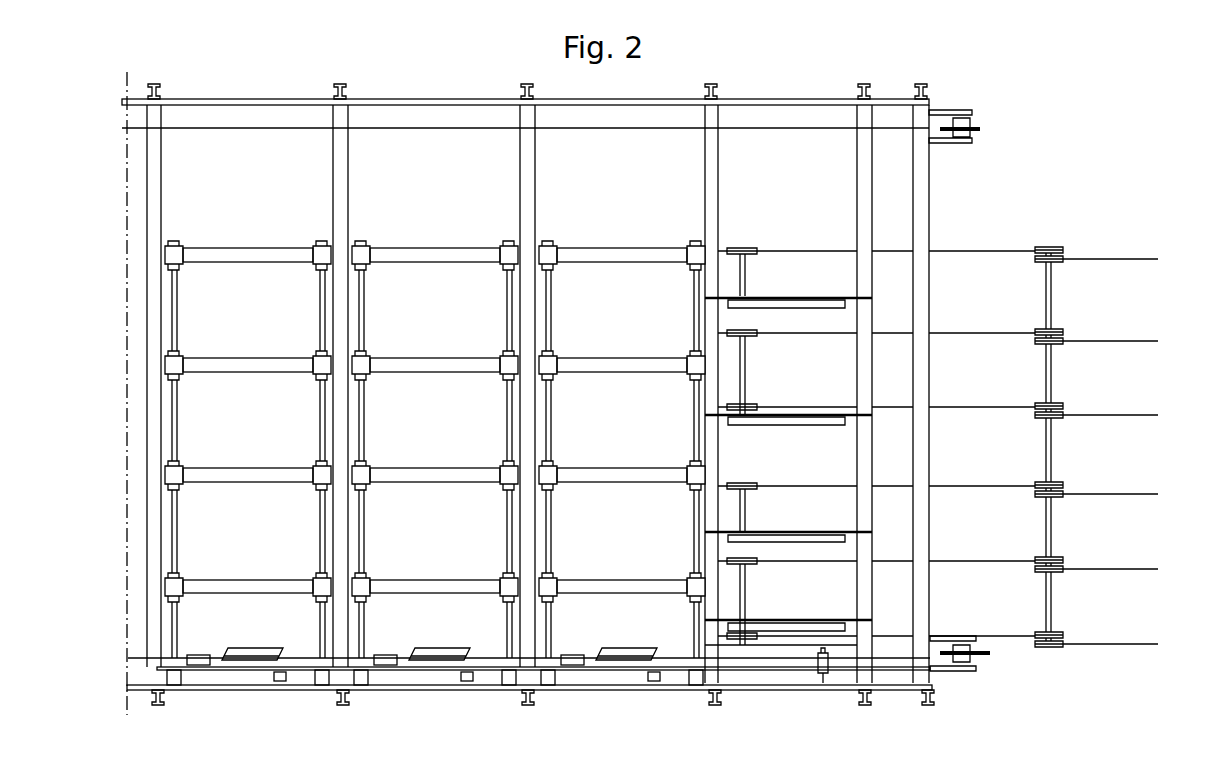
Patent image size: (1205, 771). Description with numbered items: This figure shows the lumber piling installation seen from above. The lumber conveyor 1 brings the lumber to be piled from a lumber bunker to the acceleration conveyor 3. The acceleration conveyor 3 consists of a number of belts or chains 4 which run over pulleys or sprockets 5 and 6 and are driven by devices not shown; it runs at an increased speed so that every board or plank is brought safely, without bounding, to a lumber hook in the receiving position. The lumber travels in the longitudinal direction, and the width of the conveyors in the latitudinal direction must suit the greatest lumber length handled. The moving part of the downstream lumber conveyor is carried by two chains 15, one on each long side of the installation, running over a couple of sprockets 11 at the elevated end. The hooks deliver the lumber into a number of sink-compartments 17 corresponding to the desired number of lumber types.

The lumber conveyor 1 is at (1140, 548).
The acceleration conveyor 3 is at (990, 374).
The belts or chains 4 is at (971, 332).
The pulleys or sprockets 5 is at (752, 566).
The pulleys or sprockets 6 is at (1063, 250).
The sprockets 11 is at (975, 127).
The chains 15 is at (245, 130).
The sink-compartments 17 is at (247, 191).